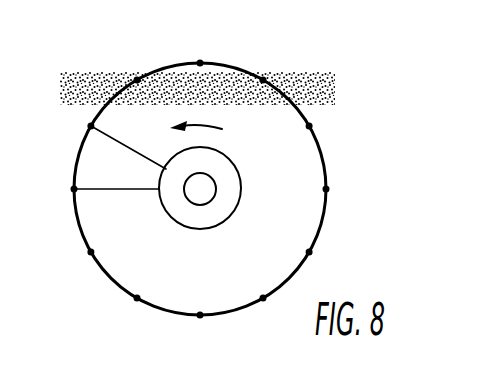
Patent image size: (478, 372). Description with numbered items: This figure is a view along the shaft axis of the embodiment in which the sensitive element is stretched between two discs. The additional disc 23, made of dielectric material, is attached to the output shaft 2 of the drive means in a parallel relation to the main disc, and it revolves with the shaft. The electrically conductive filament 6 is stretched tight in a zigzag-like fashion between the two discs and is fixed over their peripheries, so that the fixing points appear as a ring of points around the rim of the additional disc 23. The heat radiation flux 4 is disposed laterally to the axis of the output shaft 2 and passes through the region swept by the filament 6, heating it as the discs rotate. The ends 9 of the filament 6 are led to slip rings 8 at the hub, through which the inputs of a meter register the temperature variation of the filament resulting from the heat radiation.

The output shaft 2 is at (205, 191).
The heat radiation flux 4 is at (307, 77).
The electrically conductive filament 6 is at (311, 128).
The slip rings 8 is at (177, 205).
The ends of the filament 9 is at (121, 144).
The additional disc 23 is at (303, 210).